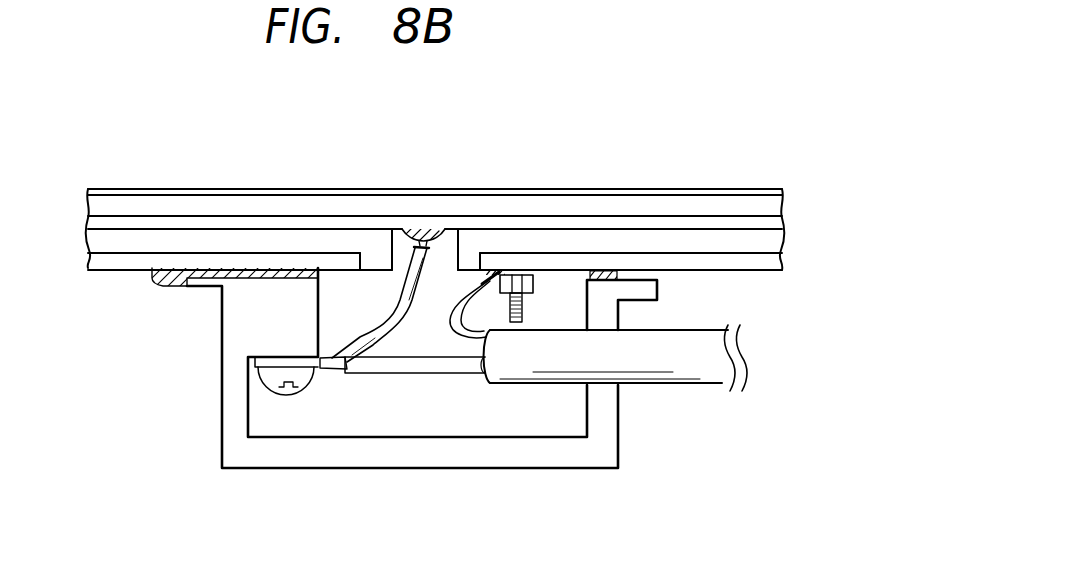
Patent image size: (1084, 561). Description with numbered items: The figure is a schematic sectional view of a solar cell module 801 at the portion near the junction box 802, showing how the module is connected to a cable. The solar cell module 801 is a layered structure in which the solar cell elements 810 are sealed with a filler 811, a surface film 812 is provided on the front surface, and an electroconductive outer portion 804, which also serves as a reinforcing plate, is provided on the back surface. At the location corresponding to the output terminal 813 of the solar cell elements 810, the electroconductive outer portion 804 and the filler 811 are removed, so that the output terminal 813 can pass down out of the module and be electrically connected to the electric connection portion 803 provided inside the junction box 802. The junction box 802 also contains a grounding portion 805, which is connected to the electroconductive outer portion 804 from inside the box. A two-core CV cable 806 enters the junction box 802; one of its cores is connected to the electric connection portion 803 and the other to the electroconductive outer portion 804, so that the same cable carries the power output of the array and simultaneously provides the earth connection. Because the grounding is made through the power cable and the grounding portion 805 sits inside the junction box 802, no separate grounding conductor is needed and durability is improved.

The solar cell module 801 is at (807, 183).
The junction box 802 is at (362, 455).
The electric connection portion 803 is at (268, 383).
The electroconductive outer portion 804 is at (768, 268).
The grounding portion 805 is at (537, 277).
The two-core CV cable 806 is at (703, 377).
The solar cell elements 810 is at (640, 222).
The filler 811 is at (258, 235).
The surface film 812 is at (128, 190).
The output terminal 813 is at (421, 228).